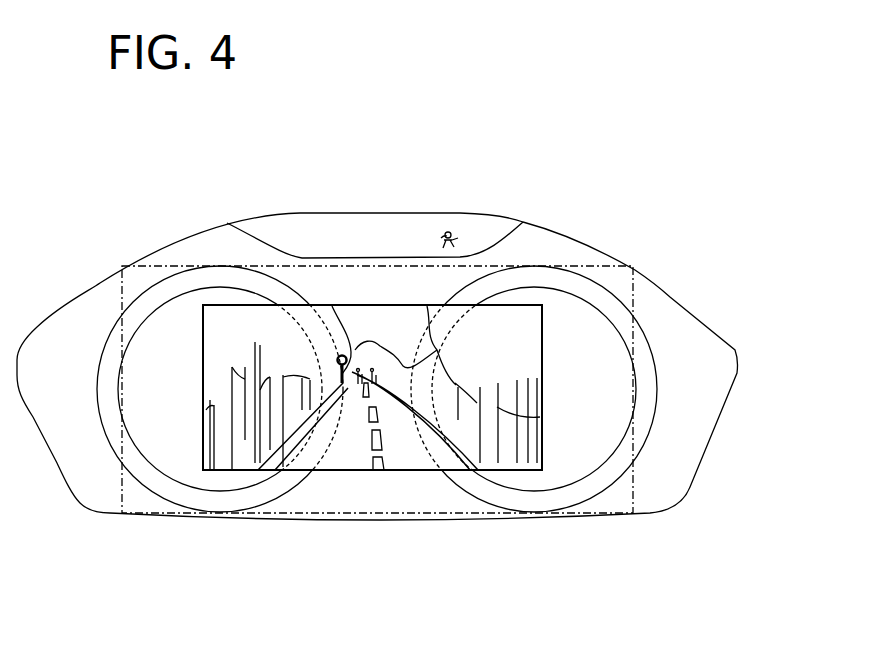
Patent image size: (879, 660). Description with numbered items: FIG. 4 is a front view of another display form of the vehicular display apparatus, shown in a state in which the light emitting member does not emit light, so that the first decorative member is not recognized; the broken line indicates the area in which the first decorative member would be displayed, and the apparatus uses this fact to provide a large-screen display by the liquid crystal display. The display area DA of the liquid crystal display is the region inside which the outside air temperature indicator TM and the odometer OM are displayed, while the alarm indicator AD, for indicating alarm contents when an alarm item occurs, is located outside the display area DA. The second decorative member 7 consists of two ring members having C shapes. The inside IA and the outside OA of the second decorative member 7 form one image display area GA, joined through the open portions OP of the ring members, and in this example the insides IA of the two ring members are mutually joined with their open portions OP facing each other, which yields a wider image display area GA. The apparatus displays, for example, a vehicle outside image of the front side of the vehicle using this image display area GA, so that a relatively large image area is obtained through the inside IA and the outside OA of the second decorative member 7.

The second decorative member 7 is at (222, 272).
The inside IA is at (158, 376).
The image display area GA is at (274, 304).
The outside OA is at (331, 333).
The outside air temperature indicator TM is at (404, 274).
The alarm indicator AD is at (466, 243).
The open portions OP is at (302, 440).
The odometer OM is at (372, 512).
The display area DA is at (633, 473).